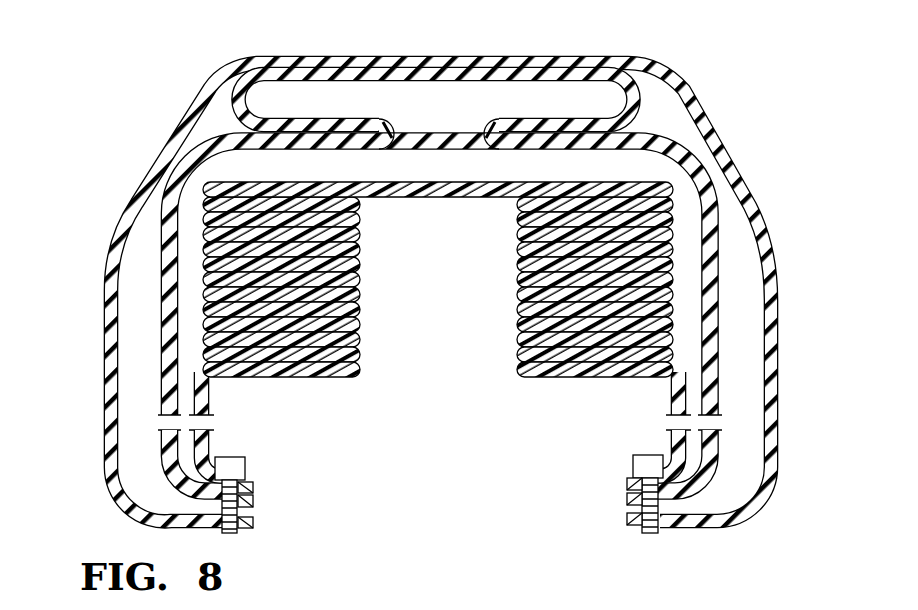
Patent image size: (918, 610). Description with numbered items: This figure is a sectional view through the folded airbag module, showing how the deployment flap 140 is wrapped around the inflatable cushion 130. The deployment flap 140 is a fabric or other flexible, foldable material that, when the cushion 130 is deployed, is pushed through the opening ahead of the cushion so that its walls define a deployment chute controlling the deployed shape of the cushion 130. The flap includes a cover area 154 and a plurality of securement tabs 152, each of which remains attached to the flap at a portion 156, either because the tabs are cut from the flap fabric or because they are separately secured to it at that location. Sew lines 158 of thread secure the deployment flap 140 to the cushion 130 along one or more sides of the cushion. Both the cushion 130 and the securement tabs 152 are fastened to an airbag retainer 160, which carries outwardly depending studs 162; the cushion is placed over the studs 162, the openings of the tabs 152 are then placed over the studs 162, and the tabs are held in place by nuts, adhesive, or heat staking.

The inflatable cushion 130 is at (433, 317).
The deployment flap 140 is at (717, 270).
The securement tabs 152 is at (778, 357).
The cover area 154 is at (477, 57).
The portion 156 is at (193, 80).
The sew lines 158 is at (160, 432).
The airbag retainer 160 is at (245, 468).
The studs 162 is at (233, 527).